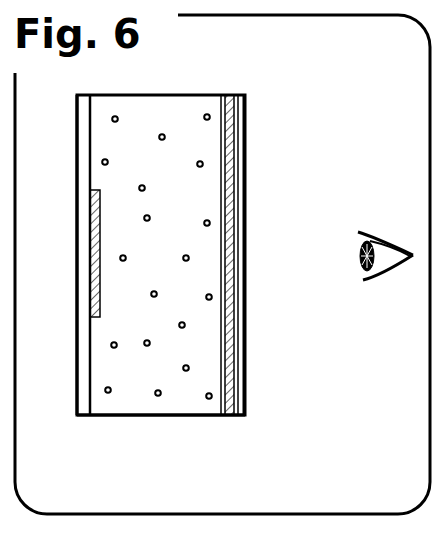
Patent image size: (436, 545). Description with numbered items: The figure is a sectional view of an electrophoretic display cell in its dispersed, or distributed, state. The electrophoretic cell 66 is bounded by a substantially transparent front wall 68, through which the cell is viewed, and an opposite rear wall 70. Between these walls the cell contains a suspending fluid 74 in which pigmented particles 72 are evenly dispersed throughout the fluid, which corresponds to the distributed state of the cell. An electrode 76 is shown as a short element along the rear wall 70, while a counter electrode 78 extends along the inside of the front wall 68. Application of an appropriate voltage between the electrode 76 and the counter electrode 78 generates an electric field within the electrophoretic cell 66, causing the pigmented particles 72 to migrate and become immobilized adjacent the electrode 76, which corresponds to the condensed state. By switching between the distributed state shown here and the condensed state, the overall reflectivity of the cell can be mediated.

The electrophoretic cell 66 is at (305, 105).
The front wall 68 is at (246, 153).
The rear wall 70 is at (77, 402).
The pigmented particles 72 is at (114, 349).
The suspending fluid 74 is at (207, 417).
The electrode 76 is at (95, 262).
The counter electrode 78 is at (231, 325).